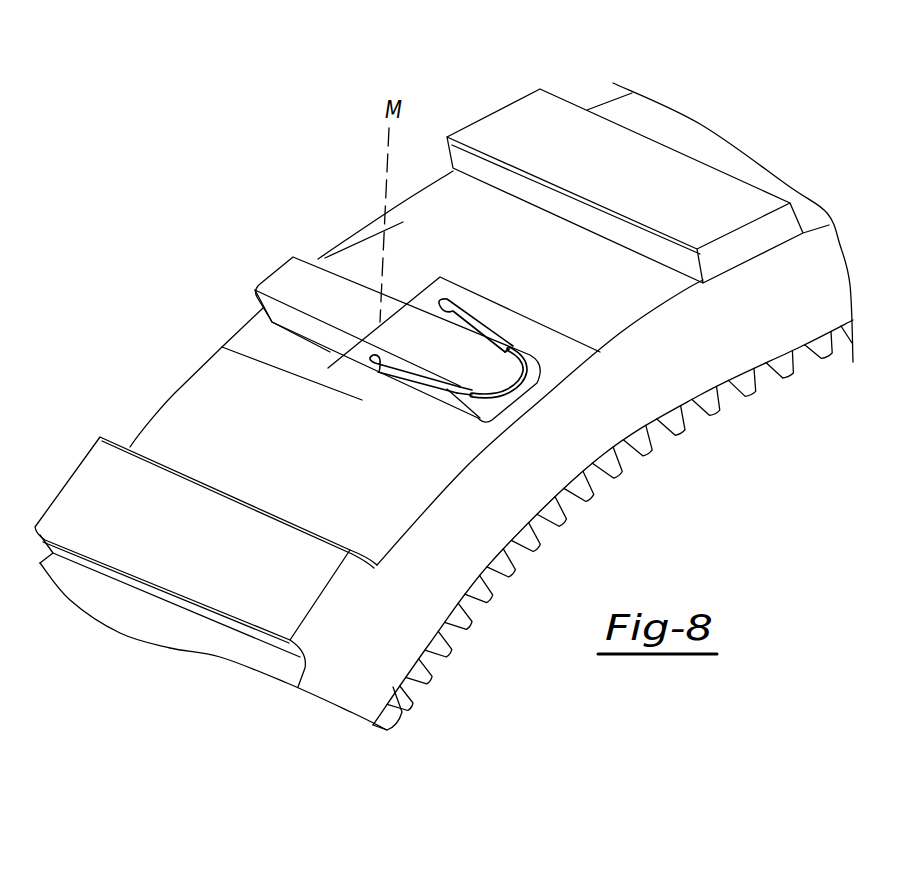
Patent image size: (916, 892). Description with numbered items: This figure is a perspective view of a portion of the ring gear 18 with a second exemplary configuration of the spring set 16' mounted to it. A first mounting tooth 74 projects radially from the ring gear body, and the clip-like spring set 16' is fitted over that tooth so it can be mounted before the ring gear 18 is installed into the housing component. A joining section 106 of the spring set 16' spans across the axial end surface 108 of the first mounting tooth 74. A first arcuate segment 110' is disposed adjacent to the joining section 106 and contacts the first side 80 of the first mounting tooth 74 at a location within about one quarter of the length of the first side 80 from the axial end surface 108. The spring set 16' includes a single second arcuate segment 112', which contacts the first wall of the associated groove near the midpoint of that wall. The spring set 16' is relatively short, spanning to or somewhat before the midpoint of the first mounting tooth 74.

The ring gear 18 is at (403, 630).
The spring set 16' is at (612, 528).
The joining section 106 is at (513, 397).
The first mounting tooth 74 is at (302, 283).
The first side 80 is at (295, 322).
The axial end surface 108 is at (493, 368).
The first arcuate segment 110' is at (484, 381).
The second arcuate segment 112' is at (416, 356).